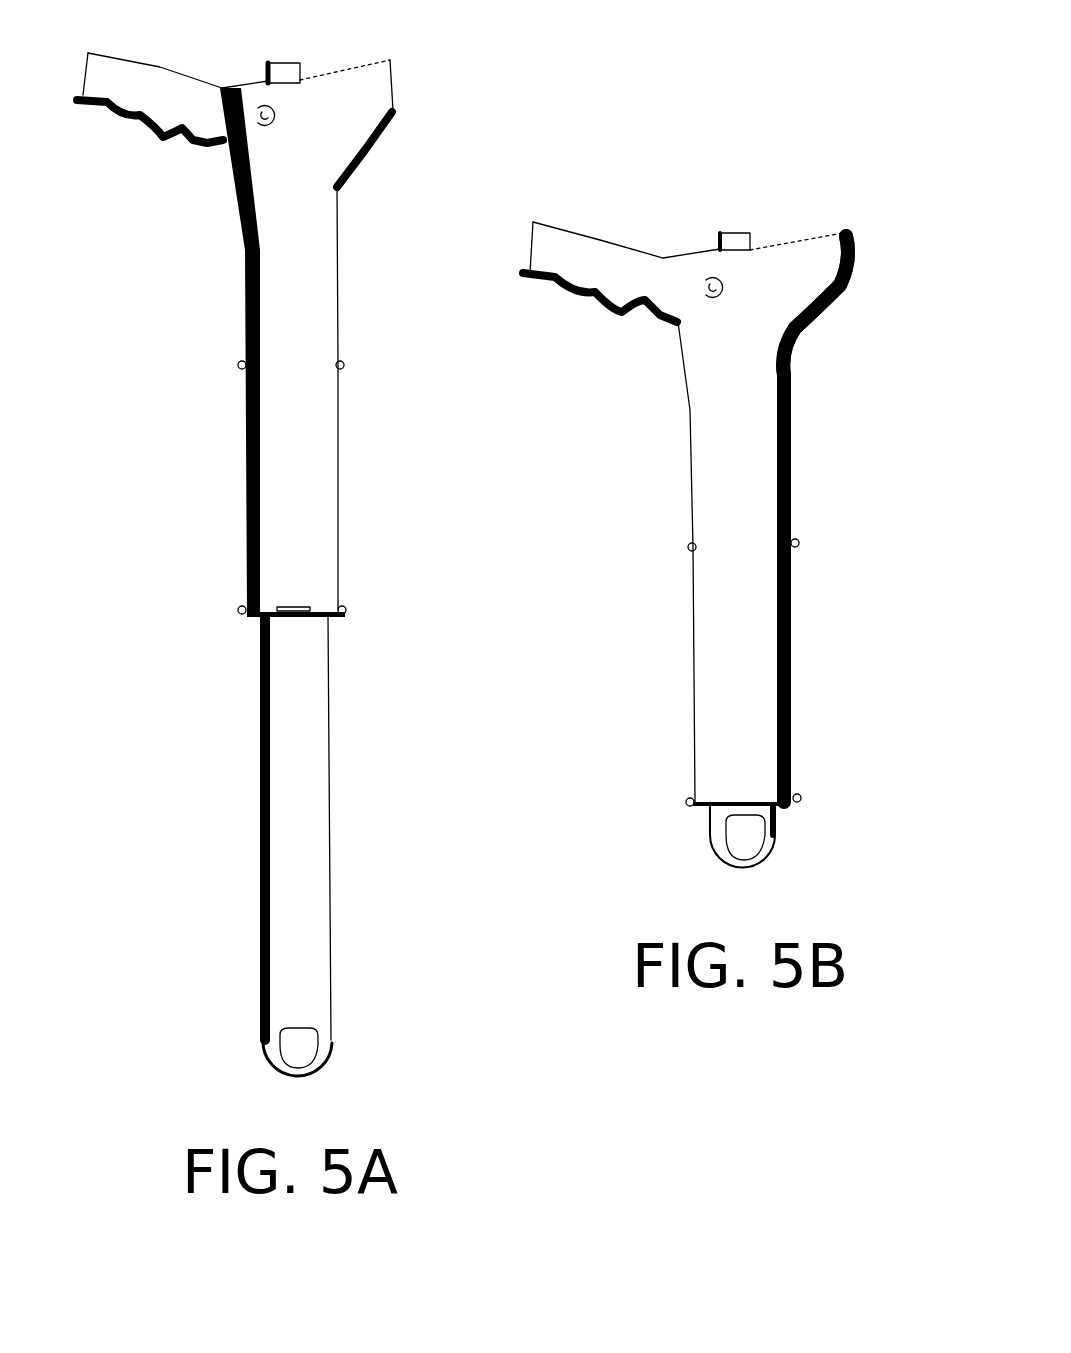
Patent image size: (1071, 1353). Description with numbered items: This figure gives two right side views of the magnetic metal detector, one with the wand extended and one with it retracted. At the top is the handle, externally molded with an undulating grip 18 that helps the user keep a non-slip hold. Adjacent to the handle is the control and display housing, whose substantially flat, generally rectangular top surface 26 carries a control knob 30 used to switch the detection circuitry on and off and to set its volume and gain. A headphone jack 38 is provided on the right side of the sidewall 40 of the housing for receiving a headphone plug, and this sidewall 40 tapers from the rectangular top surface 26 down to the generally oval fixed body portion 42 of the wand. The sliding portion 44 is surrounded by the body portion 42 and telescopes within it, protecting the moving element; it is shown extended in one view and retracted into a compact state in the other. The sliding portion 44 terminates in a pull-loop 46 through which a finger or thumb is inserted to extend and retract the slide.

In FIG. 5A, the undulating grip 18 is at (130, 145).
In FIG. 5B, the top surface 26 is at (813, 238).
In FIG. 5A, the control knob 30 is at (268, 73).
In FIG. 5B, the control knob 30 is at (720, 241).
In FIG. 5A, the headphone jack 38 is at (225, 147).
In FIG. 5B, the headphone jack 38 is at (707, 297).
In FIG. 5A, the sidewall 40 is at (370, 148).
In FIG. 5B, the sidewall 40 is at (822, 325).
In FIG. 5A, the fixed body portion 42 is at (277, 420).
In FIG. 5B, the fixed body portion 42 is at (737, 568).
In FIG. 5A, the sliding portion 44 is at (238, 867).
In FIG. 5A, the pull-loop 46 is at (293, 1075).
In FIG. 5B, the pull-loop 46 is at (720, 853).